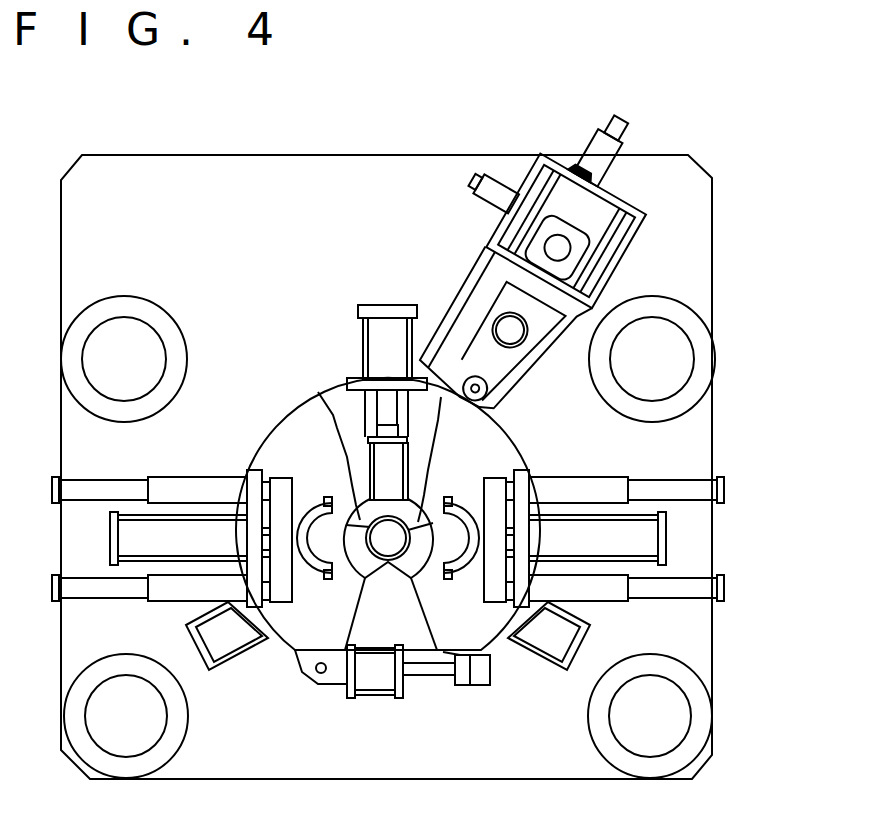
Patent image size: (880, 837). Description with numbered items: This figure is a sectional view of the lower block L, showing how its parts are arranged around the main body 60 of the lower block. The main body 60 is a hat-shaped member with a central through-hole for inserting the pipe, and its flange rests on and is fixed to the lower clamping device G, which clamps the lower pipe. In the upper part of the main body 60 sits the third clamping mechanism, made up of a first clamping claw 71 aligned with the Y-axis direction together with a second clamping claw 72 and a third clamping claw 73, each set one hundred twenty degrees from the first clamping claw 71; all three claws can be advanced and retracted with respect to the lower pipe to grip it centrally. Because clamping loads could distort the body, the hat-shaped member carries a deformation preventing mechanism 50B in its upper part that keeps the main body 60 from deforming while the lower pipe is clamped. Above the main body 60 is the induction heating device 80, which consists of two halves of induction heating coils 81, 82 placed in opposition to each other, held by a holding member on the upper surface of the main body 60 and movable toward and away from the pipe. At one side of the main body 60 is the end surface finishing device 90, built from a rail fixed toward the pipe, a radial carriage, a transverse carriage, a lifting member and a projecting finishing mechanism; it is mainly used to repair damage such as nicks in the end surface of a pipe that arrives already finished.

The main body of the lower block 60 is at (356, 439).
The first clamping claw 71 is at (341, 413).
The second clamping claw 72 is at (328, 487).
The third clamping claw 73 is at (391, 583).
The induction heating device 80 is at (410, 530).
The induction heating coil half 81 is at (293, 607).
The induction heating coil half 82 is at (499, 608).
The end surface finishing device 90 is at (605, 251).
The deformation preventing mechanism 50B is at (418, 732).
The lower clamping device G is at (454, 467).
The lower block L is at (806, 124).